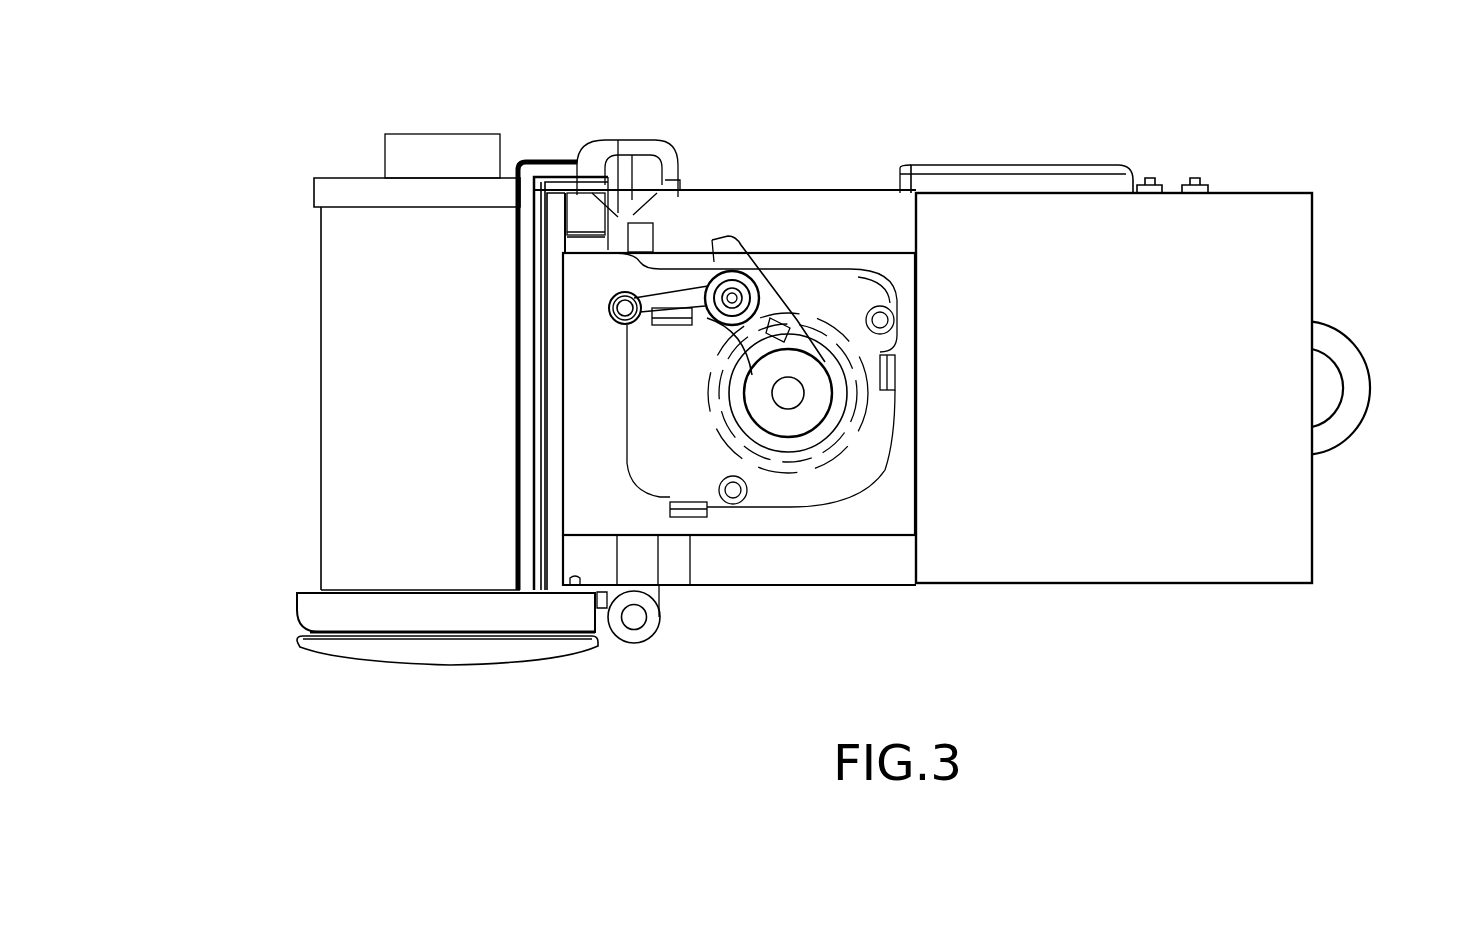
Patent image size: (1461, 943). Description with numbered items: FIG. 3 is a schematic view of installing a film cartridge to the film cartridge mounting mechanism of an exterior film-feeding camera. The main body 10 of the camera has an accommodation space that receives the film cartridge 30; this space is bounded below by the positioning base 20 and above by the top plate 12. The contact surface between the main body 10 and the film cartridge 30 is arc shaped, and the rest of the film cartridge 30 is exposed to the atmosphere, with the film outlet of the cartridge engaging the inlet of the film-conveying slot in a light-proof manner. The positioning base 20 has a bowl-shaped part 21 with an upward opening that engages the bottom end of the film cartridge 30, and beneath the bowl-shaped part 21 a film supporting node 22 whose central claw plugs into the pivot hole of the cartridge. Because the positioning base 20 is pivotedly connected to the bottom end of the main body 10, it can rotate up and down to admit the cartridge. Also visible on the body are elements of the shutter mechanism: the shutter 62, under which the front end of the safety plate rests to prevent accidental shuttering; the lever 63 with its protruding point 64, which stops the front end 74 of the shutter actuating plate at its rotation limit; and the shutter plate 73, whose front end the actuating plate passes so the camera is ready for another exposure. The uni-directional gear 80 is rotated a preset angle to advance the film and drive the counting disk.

The main body 10 is at (1262, 520).
The top plate 12 is at (536, 167).
The positioning base 20 is at (438, 694).
The bowl-shaped part 21 is at (308, 620).
The film supporting node 22 is at (445, 653).
The film cartridge 30 is at (350, 418).
The shutter 62 is at (620, 147).
The lever 63 is at (695, 260).
The protruding point 64 is at (725, 247).
The shutter plate 73 is at (770, 270).
The front end 74 is at (770, 250).
The uni-directional gear 80 is at (1015, 170).